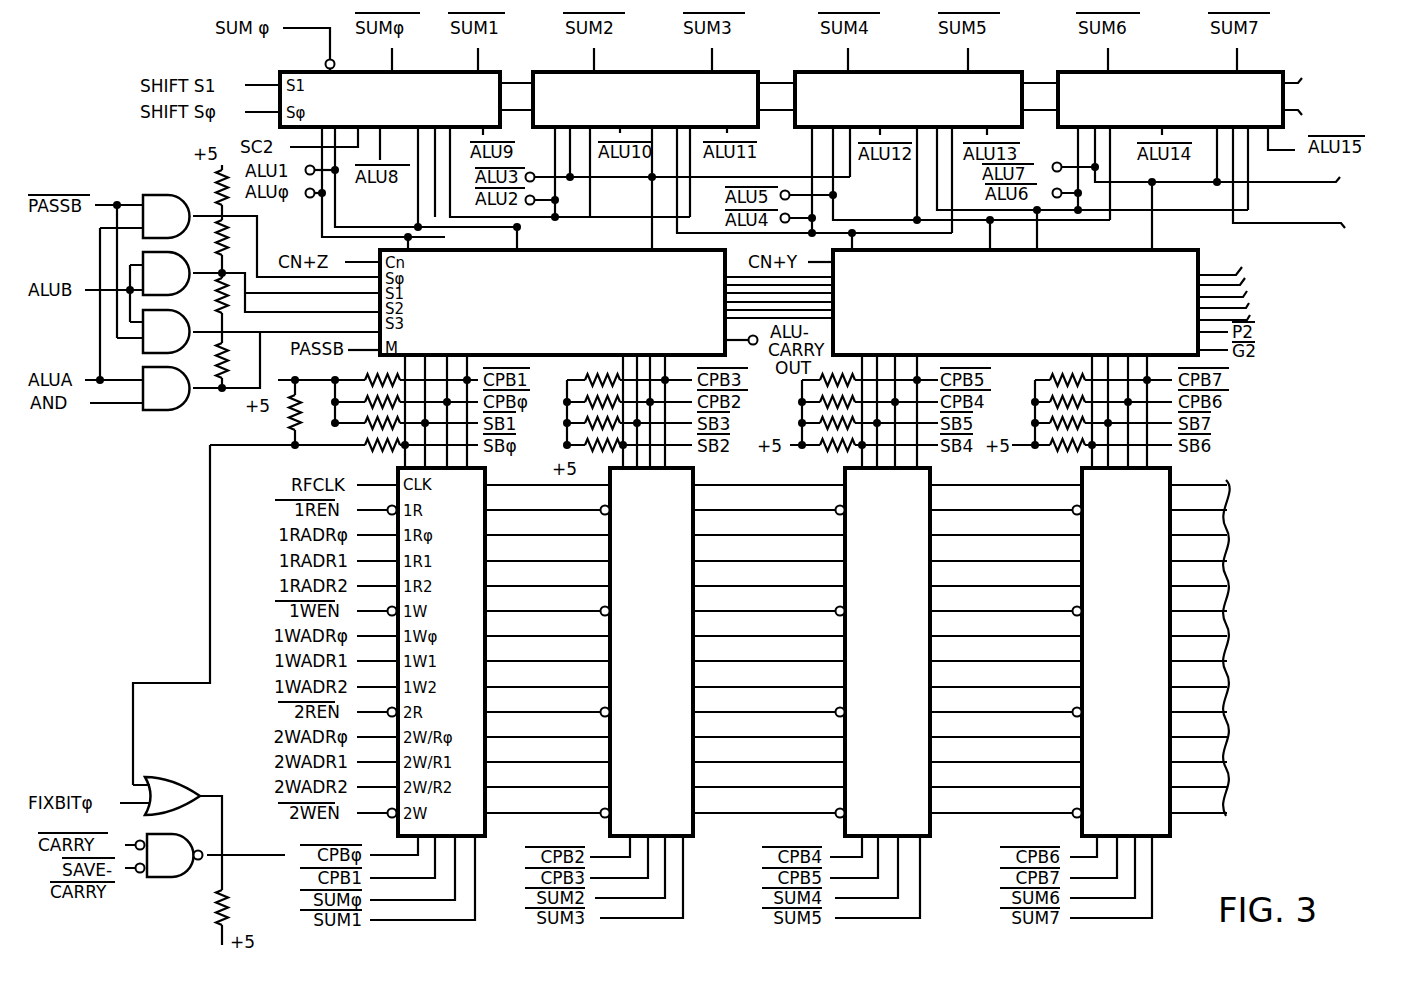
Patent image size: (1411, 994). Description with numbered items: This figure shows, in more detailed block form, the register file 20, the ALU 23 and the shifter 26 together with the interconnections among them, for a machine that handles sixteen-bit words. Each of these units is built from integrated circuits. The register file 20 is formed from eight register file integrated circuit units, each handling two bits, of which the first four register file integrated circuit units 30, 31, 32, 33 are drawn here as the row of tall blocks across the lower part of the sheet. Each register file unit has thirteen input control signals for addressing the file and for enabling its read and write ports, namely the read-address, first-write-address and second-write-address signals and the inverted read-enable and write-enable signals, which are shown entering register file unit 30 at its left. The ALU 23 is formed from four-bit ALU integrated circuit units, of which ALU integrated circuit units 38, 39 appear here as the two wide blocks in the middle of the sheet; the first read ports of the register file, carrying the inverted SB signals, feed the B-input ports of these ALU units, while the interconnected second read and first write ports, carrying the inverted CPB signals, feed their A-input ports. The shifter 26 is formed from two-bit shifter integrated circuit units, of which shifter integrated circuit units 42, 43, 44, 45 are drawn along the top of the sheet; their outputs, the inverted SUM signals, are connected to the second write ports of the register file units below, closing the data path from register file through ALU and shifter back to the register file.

The register file 20 is at (888, 652).
The ALU 23 is at (860, 302).
The shifter 26 is at (833, 98).
The register file integrated circuit unit 30 is at (474, 645).
The register file integrated circuit unit 31 is at (662, 645).
The register file integrated circuit unit 32 is at (897, 645).
The register file integrated circuit unit 33 is at (1134, 645).
The ALU integrated circuit unit 38 is at (539, 310).
The ALU integrated circuit unit 39 is at (1009, 310).
The shifter integrated circuit unit 42 is at (406, 110).
The shifter integrated circuit unit 43 is at (644, 110).
The shifter integrated circuit unit 44 is at (908, 110).
The shifter integrated circuit unit 45 is at (1164, 110).